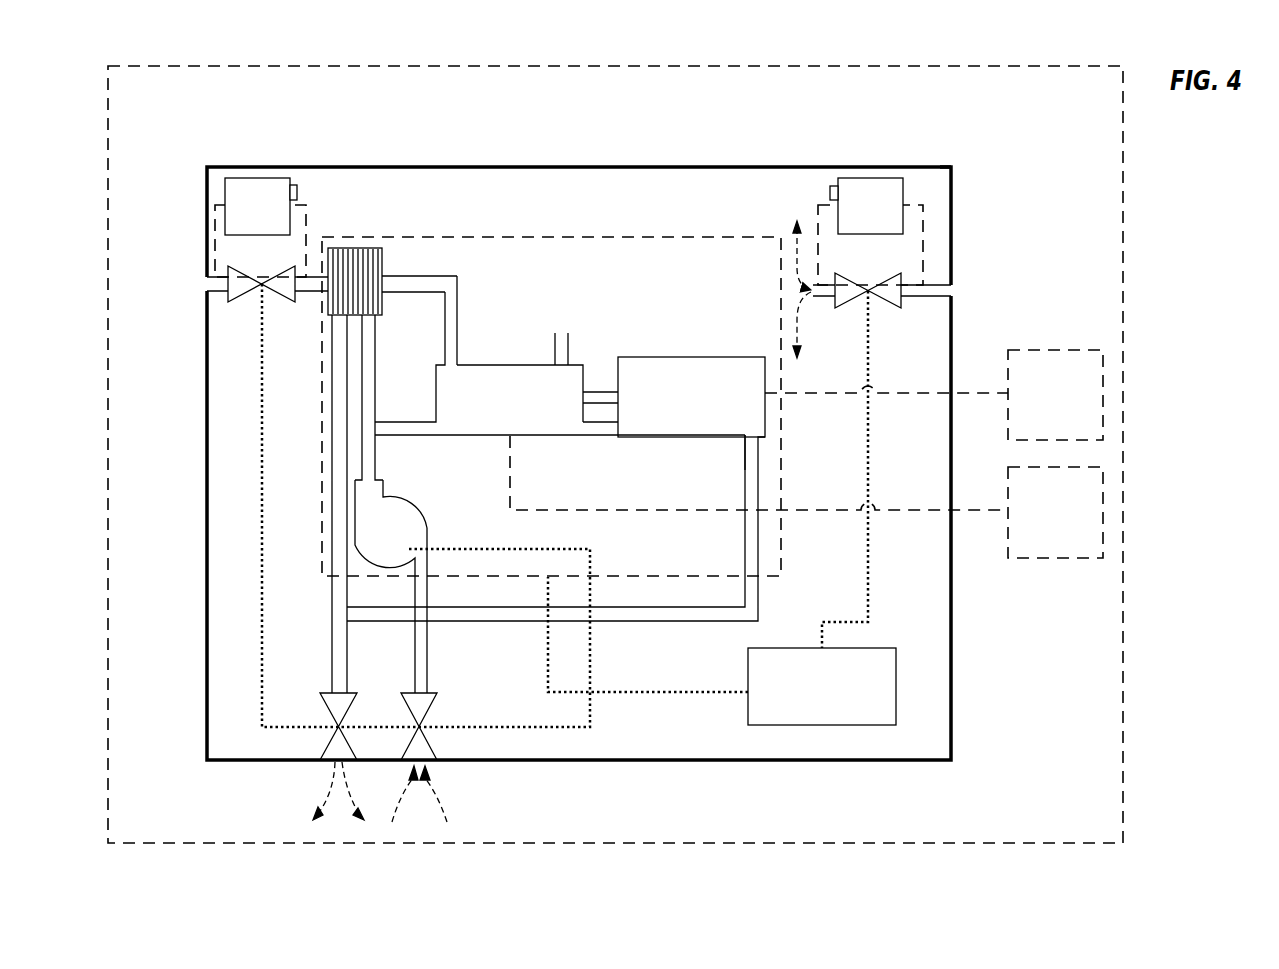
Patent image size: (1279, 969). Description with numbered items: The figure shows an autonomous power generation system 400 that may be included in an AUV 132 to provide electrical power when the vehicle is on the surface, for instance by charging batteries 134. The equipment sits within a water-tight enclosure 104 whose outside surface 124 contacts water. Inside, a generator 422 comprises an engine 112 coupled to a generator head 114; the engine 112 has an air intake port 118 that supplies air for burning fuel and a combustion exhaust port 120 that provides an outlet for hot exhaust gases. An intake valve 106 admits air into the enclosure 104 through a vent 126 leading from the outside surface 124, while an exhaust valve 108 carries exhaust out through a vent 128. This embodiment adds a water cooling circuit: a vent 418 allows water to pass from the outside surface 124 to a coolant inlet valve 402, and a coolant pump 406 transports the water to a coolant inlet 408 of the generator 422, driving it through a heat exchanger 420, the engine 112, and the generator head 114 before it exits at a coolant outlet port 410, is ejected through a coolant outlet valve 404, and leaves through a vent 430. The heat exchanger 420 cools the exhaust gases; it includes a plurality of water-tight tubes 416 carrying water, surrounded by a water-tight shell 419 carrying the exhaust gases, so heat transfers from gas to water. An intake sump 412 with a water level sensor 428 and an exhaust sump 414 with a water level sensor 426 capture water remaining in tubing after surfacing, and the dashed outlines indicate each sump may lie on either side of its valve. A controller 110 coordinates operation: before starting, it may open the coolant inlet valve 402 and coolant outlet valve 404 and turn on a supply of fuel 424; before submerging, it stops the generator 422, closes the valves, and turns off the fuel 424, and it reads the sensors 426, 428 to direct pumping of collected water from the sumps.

The autonomous power generation system 400 is at (737, 98).
The outside surface 124 is at (878, 166).
The AUV 132 is at (1124, 276).
The water-tight enclosure 104 is at (622, 195).
The exhaust sump 414 is at (243, 228).
The water level sensor 426 is at (298, 190).
The heat exchanger 420 is at (364, 244).
The water-tight shell 419 is at (385, 254).
The water-tight tubes 416 is at (373, 299).
The vent 128 is at (203, 283).
The exhaust valve 108 is at (248, 301).
The combustion exhaust port 120 is at (445, 346).
The air intake port 118 is at (555, 345).
The engine 112 is at (497, 421).
The generator head 114 is at (679, 428).
The generator 422 is at (716, 236).
The water level sensor 428 is at (830, 193).
The intake sump 412 is at (855, 228).
The vent 126 is at (957, 290).
The intake valve 106 is at (886, 300).
The batteries 134 is at (1042, 423).
The supply of fuel 424 is at (1040, 541).
The coolant inlet 408 is at (410, 423).
The coolant outlet port 410 is at (745, 458).
The coolant pump 406 is at (420, 514).
The controller 110 is at (837, 711).
The coolant outlet valve 404 is at (352, 708).
The coolant inlet valve 402 is at (432, 708).
The vent 430 is at (334, 766).
The vent 418 is at (429, 766).